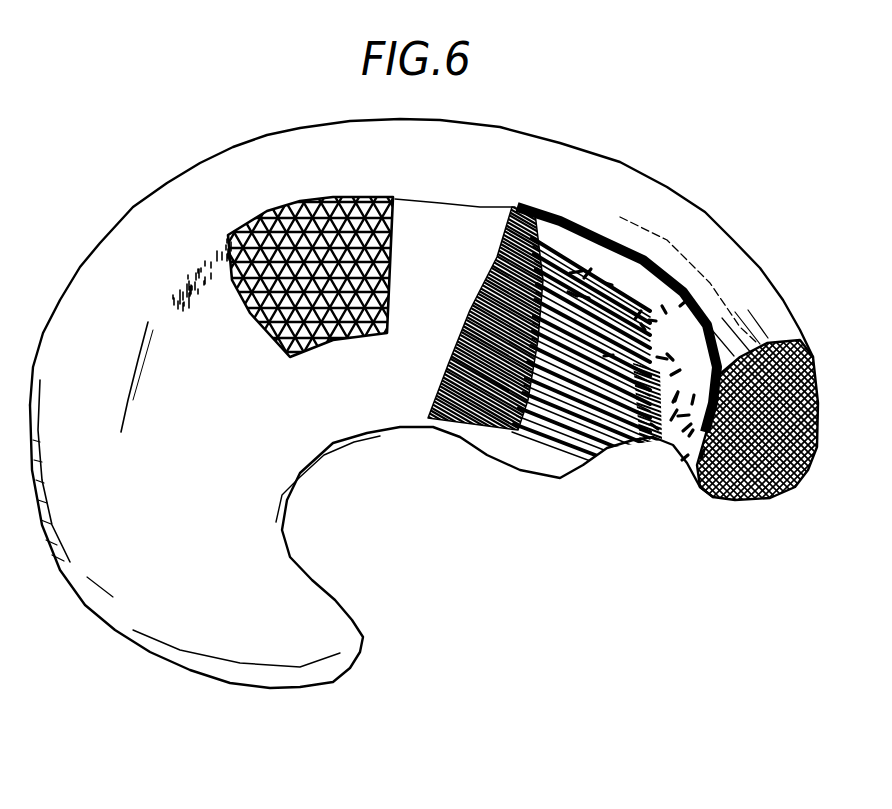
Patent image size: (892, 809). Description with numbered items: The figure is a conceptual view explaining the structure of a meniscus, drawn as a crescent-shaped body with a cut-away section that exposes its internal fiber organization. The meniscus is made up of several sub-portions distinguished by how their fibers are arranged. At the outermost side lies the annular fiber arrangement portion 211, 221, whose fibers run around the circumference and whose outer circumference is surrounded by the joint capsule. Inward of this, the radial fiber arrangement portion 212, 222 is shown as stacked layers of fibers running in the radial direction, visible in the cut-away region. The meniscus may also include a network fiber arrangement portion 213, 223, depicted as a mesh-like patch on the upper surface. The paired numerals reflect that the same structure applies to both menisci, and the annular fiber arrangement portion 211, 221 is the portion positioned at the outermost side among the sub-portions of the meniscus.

The annular fiber arrangement portion 211 is at (747, 499).
The annular fiber arrangement portion 221 is at (730, 497).
The radial fiber arrangement portion 212 is at (510, 385).
The radial fiber arrangement portion 222 is at (510, 385).
The network fiber arrangement portion 213 is at (268, 448).
The network fiber arrangement portion 223 is at (273, 343).